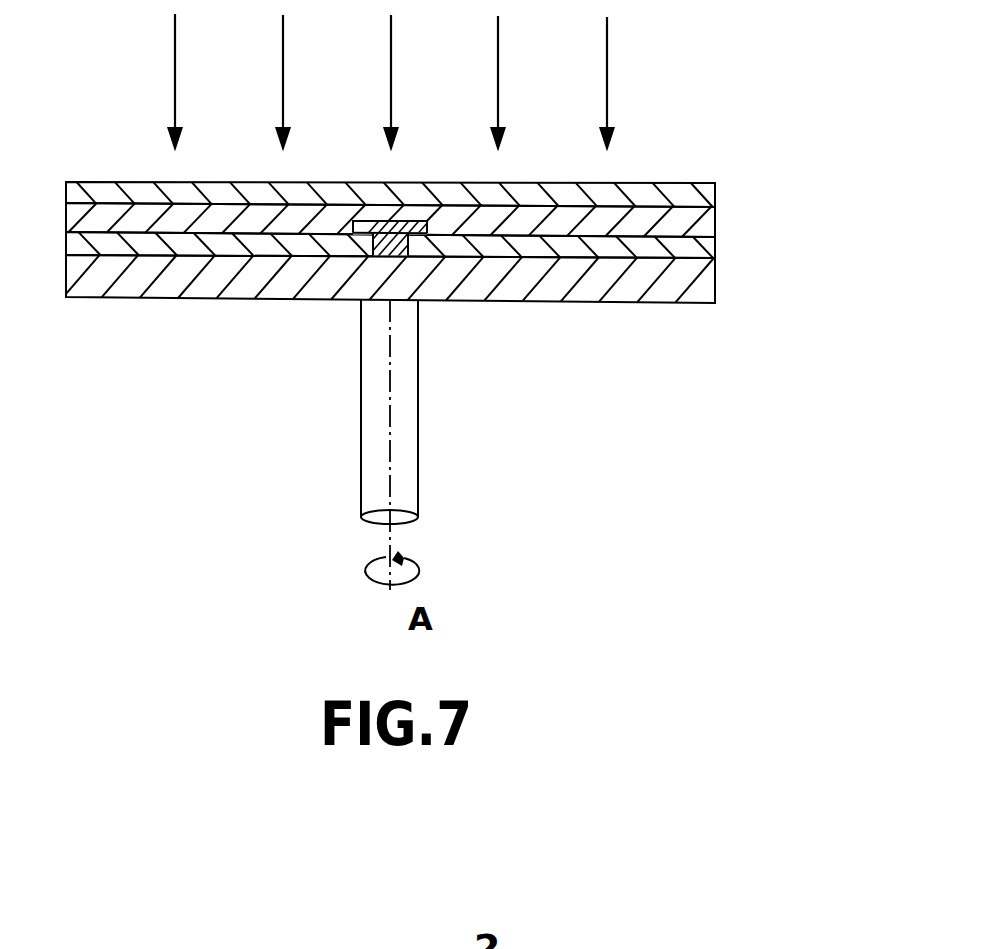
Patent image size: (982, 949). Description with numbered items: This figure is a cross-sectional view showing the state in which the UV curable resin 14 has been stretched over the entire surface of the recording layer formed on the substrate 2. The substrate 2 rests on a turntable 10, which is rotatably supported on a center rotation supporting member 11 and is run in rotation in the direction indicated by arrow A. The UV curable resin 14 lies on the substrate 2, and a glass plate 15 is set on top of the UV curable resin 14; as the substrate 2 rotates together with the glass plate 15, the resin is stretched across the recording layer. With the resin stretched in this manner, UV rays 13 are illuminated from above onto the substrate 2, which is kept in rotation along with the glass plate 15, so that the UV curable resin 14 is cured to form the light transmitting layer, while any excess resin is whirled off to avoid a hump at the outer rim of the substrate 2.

The UV rays 13 is at (608, 77).
The glass plate 15 is at (697, 198).
The UV curable resin 14 is at (690, 227).
The substrate 2 is at (688, 250).
The turntable 10 is at (680, 277).
The center rotation supporting member 11 is at (402, 417).